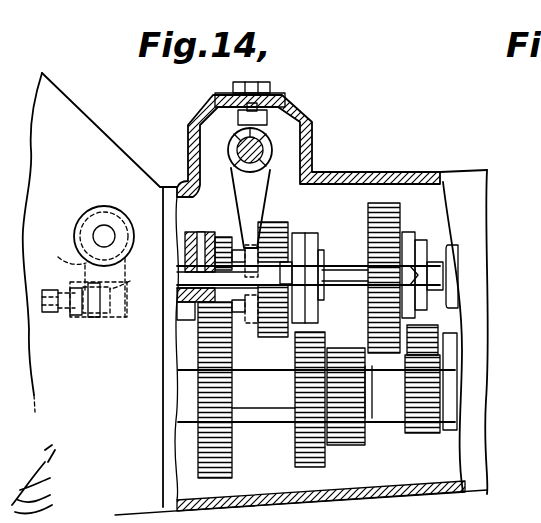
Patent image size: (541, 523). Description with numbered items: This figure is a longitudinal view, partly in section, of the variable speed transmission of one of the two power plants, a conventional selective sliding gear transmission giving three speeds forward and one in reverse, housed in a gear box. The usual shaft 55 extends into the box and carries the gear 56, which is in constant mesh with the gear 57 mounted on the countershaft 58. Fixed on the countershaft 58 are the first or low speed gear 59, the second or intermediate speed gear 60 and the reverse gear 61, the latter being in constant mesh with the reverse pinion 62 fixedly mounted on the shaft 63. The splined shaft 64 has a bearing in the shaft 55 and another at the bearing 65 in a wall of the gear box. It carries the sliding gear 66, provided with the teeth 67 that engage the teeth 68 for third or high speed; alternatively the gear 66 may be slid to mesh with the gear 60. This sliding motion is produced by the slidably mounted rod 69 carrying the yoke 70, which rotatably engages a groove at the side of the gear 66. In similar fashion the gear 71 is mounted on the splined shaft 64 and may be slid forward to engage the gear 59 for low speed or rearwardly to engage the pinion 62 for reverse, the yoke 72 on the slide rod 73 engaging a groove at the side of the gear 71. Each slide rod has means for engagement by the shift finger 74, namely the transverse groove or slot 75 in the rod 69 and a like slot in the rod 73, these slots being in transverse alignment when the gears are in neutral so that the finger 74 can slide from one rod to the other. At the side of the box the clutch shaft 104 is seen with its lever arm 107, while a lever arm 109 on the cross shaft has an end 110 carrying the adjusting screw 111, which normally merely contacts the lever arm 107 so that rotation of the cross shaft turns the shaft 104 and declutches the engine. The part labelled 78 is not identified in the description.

The shaft 55 is at (185, 313).
The gear 56 is at (218, 240).
The gear 57 is at (205, 360).
The countershaft 58 is at (263, 410).
The first or low speed gear 59 is at (365, 446).
The second or intermediate speed gear 60 is at (318, 468).
The reverse gear 61 is at (433, 432).
The reverse pinion 62 is at (441, 328).
The shaft 63 is at (446, 348).
The splined shaft 64 is at (322, 264).
The bearing 65 is at (456, 250).
The sliding gear 66 is at (273, 223).
The teeth 67 is at (250, 324).
The teeth 68 is at (239, 250).
The slide rod 69 is at (344, 268).
The yoke 70 is at (323, 301).
The gear 71 is at (381, 205).
The yoke 72 is at (412, 234).
The slide rod 73 is at (432, 280).
The shift finger 74 is at (262, 178).
The transverse groove or slot 75 is at (237, 318).
The pivot bearing 78 is at (262, 138).
The shaft 104 is at (106, 228).
The lever arm 107 is at (118, 293).
The lever arm 109 is at (57, 257).
The end 110 is at (88, 318).
The adjusting screw 111 is at (61, 318).